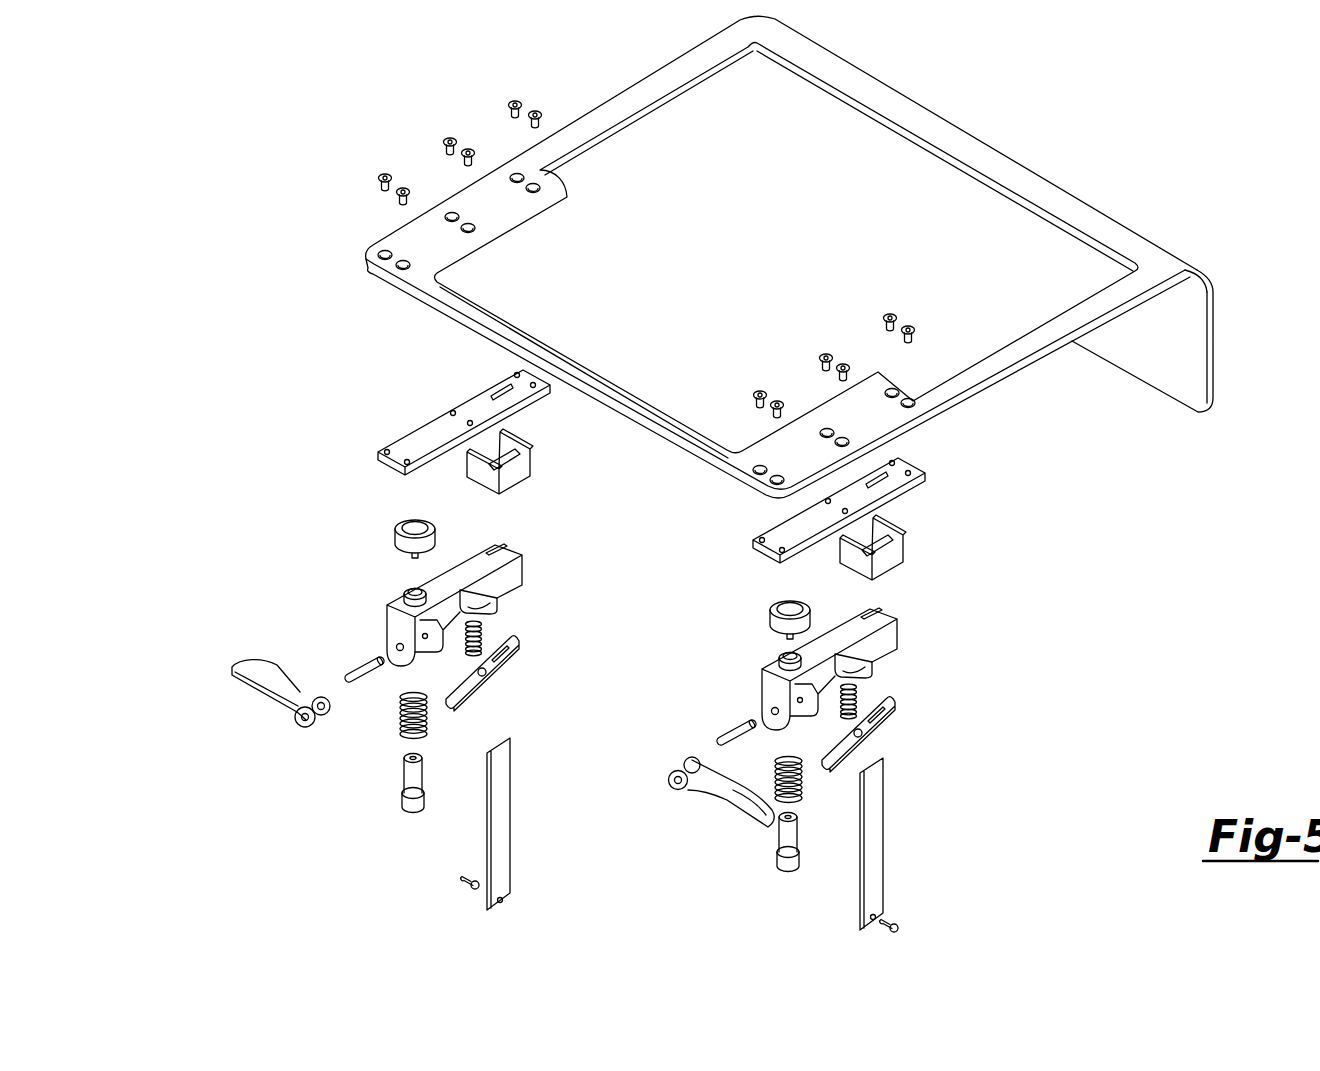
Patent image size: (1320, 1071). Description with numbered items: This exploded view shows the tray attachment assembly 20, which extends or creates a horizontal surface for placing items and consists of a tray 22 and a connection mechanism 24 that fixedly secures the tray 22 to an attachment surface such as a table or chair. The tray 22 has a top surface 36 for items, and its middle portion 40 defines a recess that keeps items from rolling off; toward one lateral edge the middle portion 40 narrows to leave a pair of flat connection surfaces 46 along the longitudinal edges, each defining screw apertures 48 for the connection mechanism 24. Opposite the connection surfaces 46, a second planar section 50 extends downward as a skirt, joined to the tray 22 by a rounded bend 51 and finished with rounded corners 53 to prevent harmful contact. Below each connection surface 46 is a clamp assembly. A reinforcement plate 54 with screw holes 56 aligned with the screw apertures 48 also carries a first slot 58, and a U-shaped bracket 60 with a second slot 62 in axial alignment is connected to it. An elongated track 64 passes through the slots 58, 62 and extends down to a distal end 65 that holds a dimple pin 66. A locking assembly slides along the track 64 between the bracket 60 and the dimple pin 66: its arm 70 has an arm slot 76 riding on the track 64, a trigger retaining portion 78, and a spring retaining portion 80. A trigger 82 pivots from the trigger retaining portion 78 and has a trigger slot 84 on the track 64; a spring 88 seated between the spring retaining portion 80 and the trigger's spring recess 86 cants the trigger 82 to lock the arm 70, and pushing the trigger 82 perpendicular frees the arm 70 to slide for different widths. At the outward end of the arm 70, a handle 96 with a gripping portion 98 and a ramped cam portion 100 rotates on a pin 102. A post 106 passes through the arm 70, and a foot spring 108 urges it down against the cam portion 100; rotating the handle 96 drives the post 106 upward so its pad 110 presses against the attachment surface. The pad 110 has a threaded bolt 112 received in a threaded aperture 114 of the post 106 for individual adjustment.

The tray attachment assembly 20 is at (299, 130).
The tray 22 is at (679, 130).
The connection mechanism 24 is at (1082, 711).
The top surface 36 is at (982, 267).
The middle portion 40 is at (742, 232).
The connection surfaces 46 is at (400, 237).
The screw apertures 48 is at (538, 188).
The second planar section 50 is at (1183, 336).
The bend 51 is at (1070, 200).
The rounded corners 53 is at (1213, 402).
The reinforcement plate 54 is at (413, 440).
The screw holes 56 is at (538, 383).
The first slot 58 is at (497, 393).
The bracket 60 is at (530, 487).
The second slot 62 is at (502, 467).
The elongated track 64 is at (503, 820).
The distal end 65 is at (505, 900).
The dimple pin 66 is at (462, 882).
The arm 70 is at (540, 550).
The arm slot 76 is at (502, 548).
The trigger retaining portion 78 is at (508, 600).
The spring retaining portion 80 is at (472, 603).
The trigger 82 is at (470, 684).
The trigger slot 84 is at (480, 652).
The spring recess 86 is at (483, 672).
The spring 88 is at (513, 647).
The handle 96 is at (218, 665).
The gripping portion 98 is at (253, 663).
The cam portion 100 is at (310, 725).
The pin 102 is at (365, 652).
The post 106 is at (405, 785).
The foot spring 108 is at (403, 732).
The pad 110 is at (397, 537).
The threaded bolt 112 is at (412, 552).
The threaded aperture 114 is at (417, 757).